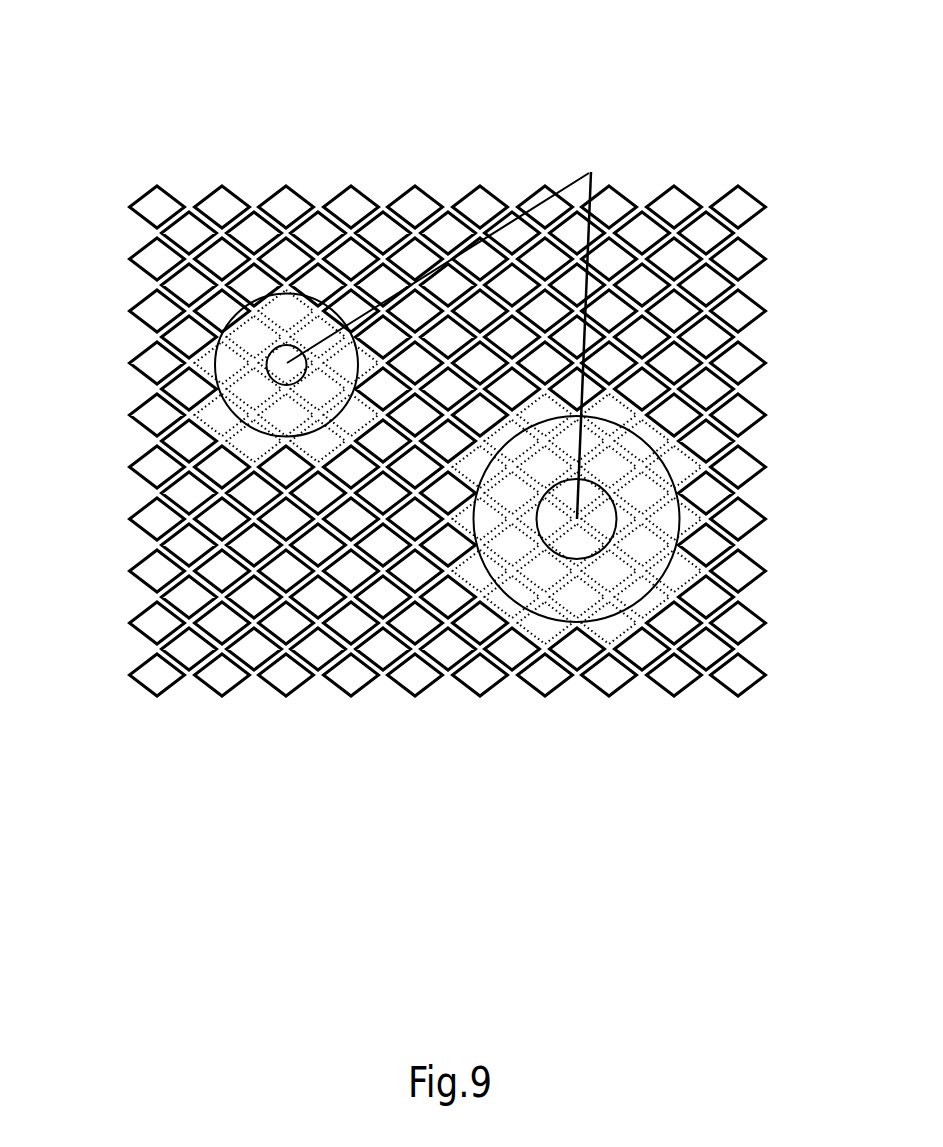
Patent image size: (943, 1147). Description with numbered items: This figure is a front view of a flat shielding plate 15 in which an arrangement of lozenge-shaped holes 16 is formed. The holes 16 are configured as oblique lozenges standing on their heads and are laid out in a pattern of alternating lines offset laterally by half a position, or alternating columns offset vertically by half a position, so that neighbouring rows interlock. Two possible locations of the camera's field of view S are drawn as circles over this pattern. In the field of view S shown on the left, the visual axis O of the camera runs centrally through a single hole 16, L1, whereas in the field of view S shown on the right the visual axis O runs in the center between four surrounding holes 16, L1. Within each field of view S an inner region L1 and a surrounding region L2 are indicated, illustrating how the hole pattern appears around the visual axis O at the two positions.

The shielding plate 15 is at (130, 118).
The lozenge-shaped holes 16 is at (270, 683).
The visual axis O is at (444, 331).
The field of view S is at (283, 293).
The hole location at the visual axis L1 is at (287, 373).
The annular spot region L2 is at (245, 333).